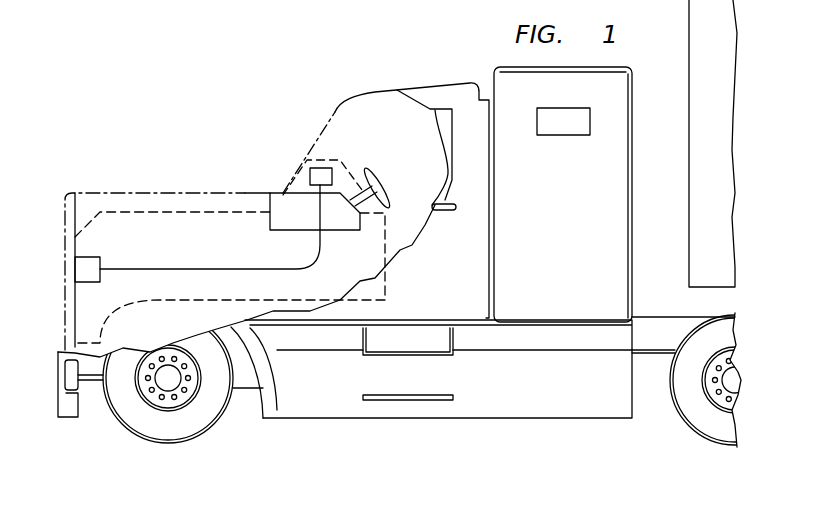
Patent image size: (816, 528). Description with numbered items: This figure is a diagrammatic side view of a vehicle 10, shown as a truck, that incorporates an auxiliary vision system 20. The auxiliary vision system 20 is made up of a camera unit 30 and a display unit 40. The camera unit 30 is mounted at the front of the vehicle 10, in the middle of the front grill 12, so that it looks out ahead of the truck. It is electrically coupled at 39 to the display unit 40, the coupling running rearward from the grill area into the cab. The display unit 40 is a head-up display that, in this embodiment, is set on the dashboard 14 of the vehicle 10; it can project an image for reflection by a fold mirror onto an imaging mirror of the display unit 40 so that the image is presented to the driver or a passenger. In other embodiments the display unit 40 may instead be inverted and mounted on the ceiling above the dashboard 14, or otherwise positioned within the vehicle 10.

The vehicle 10 is at (218, 80).
The front grill 12 is at (72, 220).
The dashboard 14 is at (300, 183).
The auxiliary vision system 20 is at (387, 294).
The camera unit 30 is at (103, 258).
The electrical coupling 39 is at (227, 268).
The display unit 40 is at (325, 167).